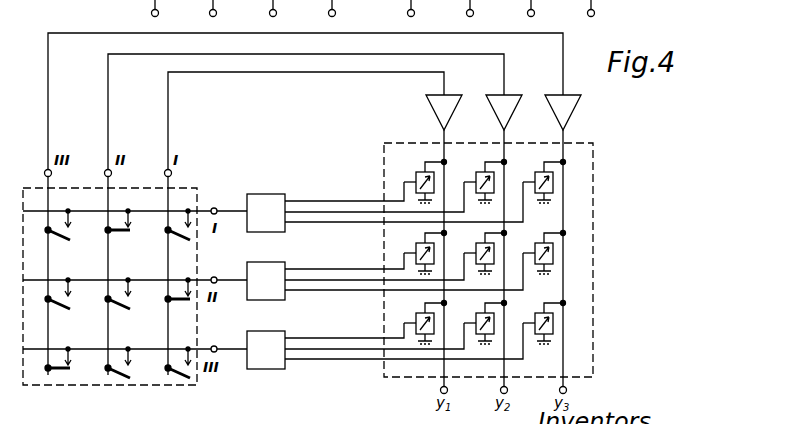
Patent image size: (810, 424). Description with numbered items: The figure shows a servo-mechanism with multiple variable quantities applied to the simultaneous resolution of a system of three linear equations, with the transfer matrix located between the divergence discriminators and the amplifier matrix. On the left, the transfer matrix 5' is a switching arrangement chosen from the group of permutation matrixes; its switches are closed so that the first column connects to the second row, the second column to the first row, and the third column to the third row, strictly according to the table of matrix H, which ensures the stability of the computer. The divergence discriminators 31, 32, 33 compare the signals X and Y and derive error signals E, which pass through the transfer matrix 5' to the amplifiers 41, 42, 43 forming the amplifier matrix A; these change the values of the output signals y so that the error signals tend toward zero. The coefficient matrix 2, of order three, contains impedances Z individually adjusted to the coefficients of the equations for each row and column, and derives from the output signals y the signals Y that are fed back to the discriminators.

The coefficient matrix 2 is at (488, 260).
The divergence discriminator 31 is at (266, 213).
The divergence discriminator 32 is at (266, 281).
The divergence discriminator 33 is at (266, 350).
The amplifier 41 is at (427, 112).
The amplifier 42 is at (494, 112).
The amplifier 43 is at (553, 112).
The transfer matrix 5' is at (143, 260).